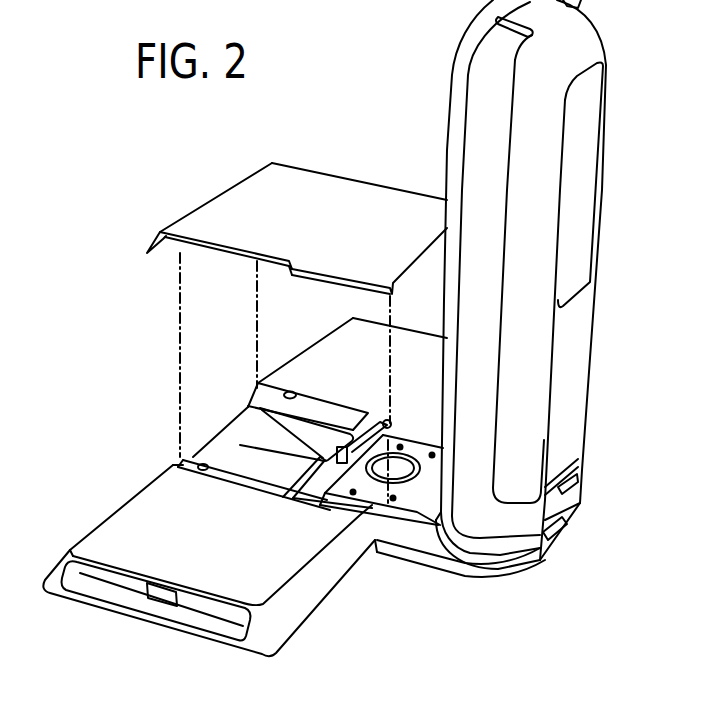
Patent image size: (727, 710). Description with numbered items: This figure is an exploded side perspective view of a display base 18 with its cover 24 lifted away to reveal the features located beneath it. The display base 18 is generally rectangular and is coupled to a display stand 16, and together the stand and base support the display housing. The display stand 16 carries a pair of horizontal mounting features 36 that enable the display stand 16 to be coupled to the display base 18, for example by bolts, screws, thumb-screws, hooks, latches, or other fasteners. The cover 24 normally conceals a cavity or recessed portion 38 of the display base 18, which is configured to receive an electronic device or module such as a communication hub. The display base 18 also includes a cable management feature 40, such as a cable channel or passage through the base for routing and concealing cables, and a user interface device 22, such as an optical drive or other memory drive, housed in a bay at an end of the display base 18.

The display stand 16 is at (583, 33).
The cover 24 is at (245, 202).
The recessed portion 38 is at (240, 447).
The display base 18 is at (145, 513).
The user interface device 22 is at (207, 608).
The cable management feature 40 is at (378, 514).
The horizontal mounting features 36 is at (398, 497).